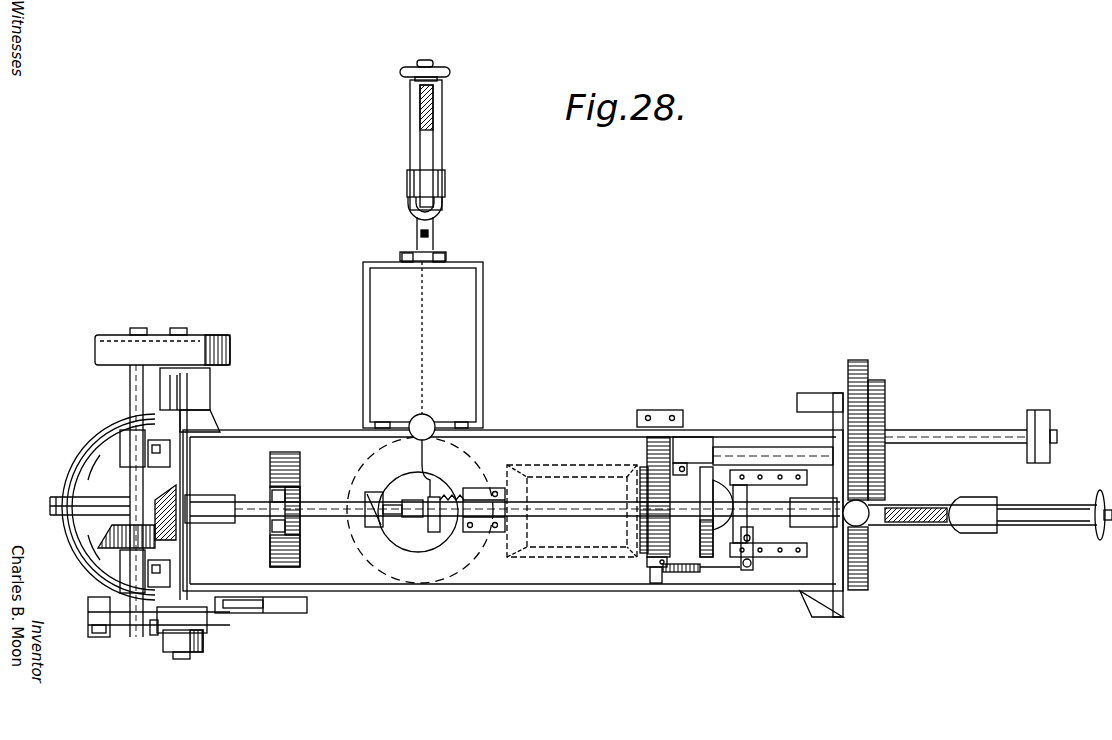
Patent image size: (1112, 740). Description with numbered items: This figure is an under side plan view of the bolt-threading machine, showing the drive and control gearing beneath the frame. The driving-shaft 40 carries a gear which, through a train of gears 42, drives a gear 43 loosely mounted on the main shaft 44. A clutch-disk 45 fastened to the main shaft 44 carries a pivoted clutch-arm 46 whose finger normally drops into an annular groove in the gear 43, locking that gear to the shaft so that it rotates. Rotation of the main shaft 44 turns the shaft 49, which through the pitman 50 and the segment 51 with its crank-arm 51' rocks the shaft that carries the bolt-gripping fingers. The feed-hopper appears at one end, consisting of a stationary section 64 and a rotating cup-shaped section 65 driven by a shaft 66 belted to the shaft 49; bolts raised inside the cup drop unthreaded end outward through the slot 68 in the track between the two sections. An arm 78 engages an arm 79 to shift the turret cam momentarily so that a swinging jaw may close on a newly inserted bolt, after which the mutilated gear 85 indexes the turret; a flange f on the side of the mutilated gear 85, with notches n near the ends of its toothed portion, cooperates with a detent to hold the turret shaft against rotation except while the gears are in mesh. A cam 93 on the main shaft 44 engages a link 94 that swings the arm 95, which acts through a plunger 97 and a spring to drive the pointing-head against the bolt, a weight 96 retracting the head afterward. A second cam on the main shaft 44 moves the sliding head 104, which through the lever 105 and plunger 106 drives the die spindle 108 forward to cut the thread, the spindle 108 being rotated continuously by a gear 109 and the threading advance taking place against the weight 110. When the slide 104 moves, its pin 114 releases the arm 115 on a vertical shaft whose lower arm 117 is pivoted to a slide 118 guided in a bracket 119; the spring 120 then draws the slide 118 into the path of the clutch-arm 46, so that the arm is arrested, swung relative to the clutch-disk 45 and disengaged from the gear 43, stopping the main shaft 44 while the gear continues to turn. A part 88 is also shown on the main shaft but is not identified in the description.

The driving-shaft 40 is at (637, 421).
The train of gears 42 is at (656, 437).
The gear 43 is at (706, 467).
The main shaft 44 is at (330, 502).
The clutch-disk 45 is at (640, 470).
The clutch-arm 46 is at (630, 550).
The shaft 49 is at (130, 402).
The pitman 50 is at (152, 630).
The segment 51 is at (298, 626).
The crank-arm 51' is at (261, 626).
The stationary section 64 is at (100, 540).
The rotating cup-shaped section 65 is at (72, 470).
The shaft 66 is at (180, 330).
The slot 68 is at (50, 503).
The arm 78 is at (413, 518).
The arm 79 is at (398, 516).
The mutilated gear 85 is at (272, 556).
The collar 88 is at (372, 492).
The cam 93 is at (438, 532).
The link 94 is at (436, 236).
The arm 95 is at (445, 192).
The weight 96 is at (426, 420).
The plunger 97 is at (426, 60).
The sliding head 104 is at (745, 470).
The lever 105 is at (960, 534).
The plunger 106 is at (1100, 492).
The spindle 108 is at (722, 530).
The gear 109 is at (866, 591).
The weight 110 is at (868, 526).
The pin 114 is at (742, 512).
The arm 115 is at (790, 552).
The arm 117 is at (752, 566).
The slide 118 is at (686, 575).
The bracket 119 is at (648, 578).
The spring 120 is at (664, 592).
The flange f is at (287, 452).
The notches n is at (272, 487).